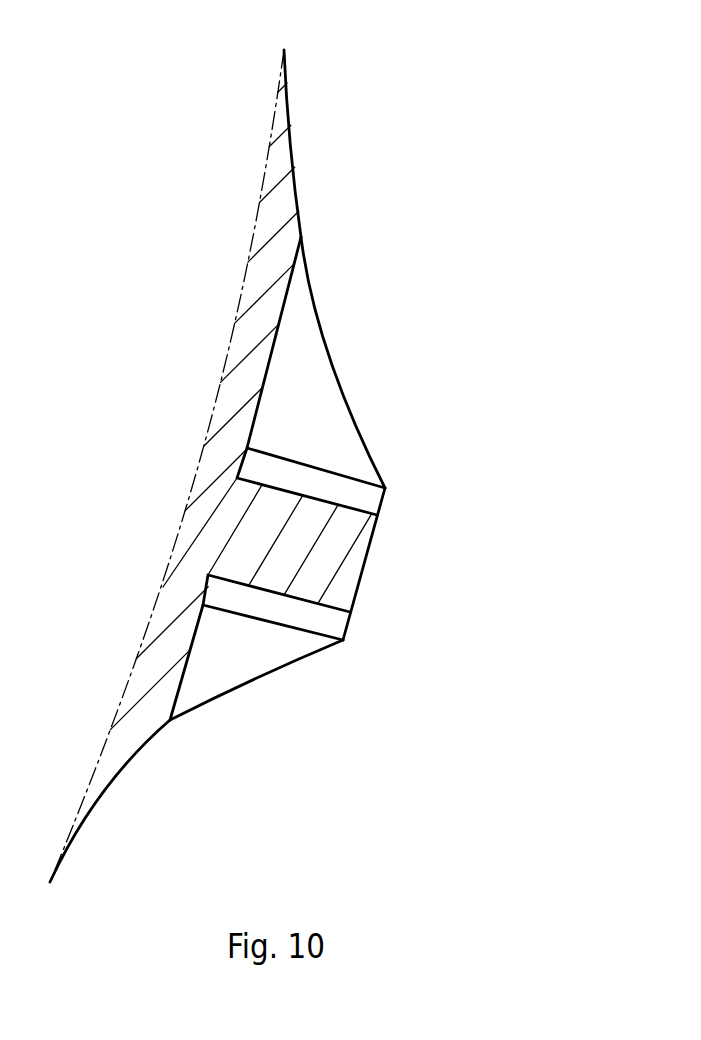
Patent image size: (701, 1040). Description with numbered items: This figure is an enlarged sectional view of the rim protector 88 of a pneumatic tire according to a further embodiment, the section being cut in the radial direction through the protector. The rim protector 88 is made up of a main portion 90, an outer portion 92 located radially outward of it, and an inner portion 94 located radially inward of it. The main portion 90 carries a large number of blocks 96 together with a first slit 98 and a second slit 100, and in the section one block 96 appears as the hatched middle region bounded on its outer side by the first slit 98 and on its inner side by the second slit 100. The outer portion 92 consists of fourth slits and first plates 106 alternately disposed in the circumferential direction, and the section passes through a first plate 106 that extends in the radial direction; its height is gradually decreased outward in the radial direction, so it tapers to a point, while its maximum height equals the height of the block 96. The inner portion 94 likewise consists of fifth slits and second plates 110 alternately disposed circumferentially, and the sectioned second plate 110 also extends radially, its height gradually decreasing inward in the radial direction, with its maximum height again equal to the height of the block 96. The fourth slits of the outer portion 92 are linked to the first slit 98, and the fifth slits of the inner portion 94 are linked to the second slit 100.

The rim protector 88 is at (612, 42).
The main portion 90 is at (373, 568).
The outer portion 92 is at (338, 375).
The inner portion 94 is at (247, 690).
The block 96 is at (280, 540).
The first slit 98 is at (283, 490).
The second slit 100 is at (302, 602).
The first plate 106 is at (290, 417).
The second plate 110 is at (230, 653).